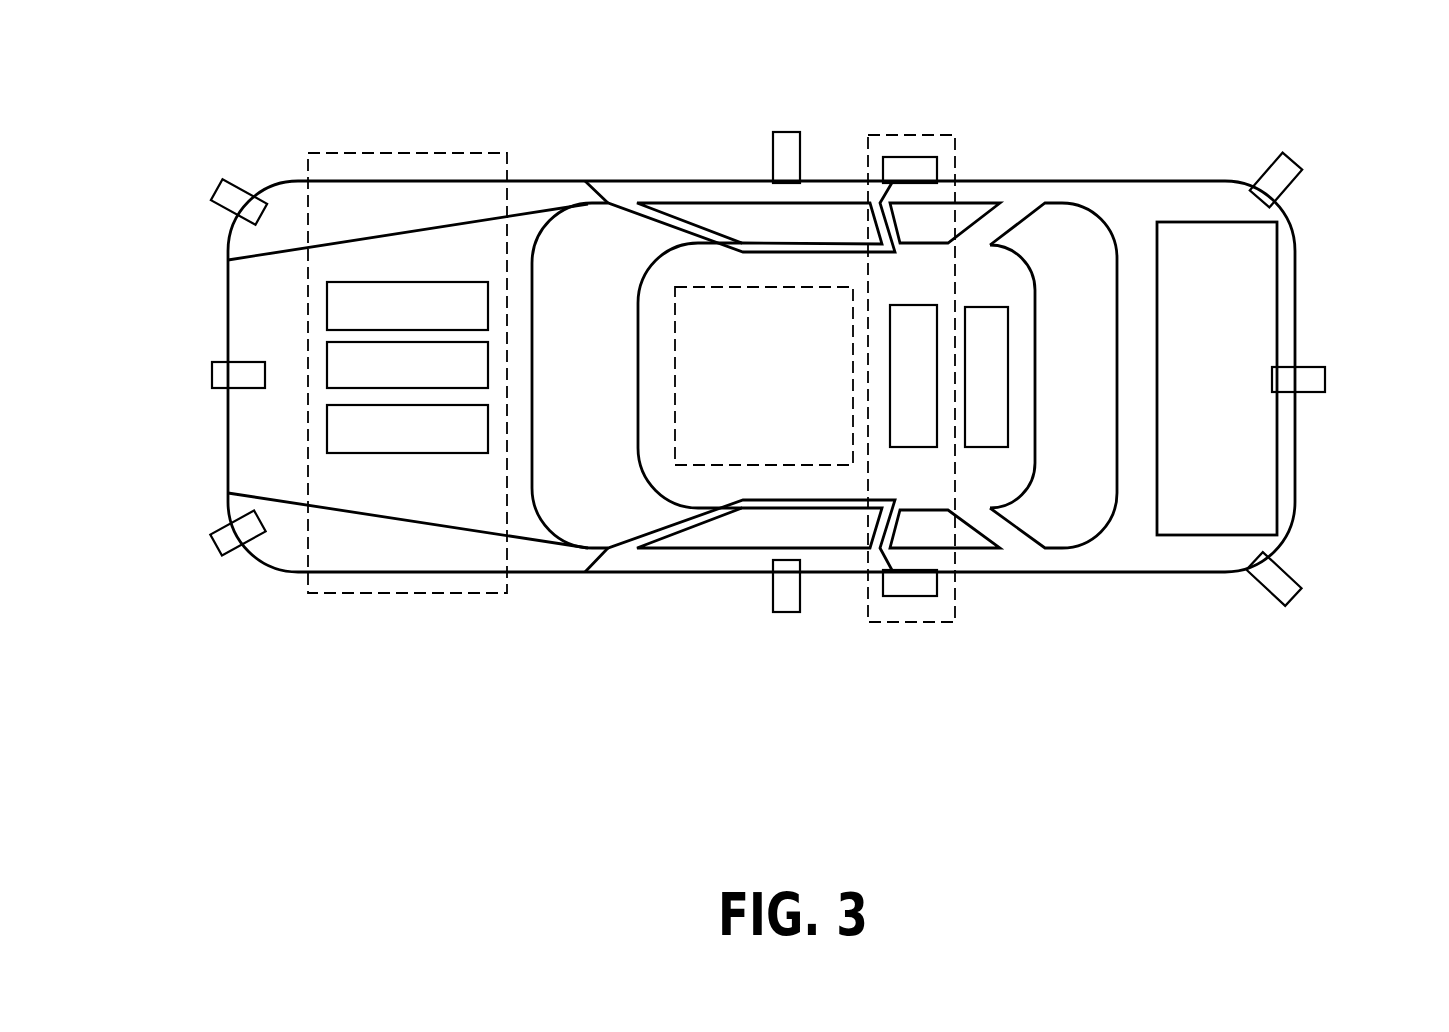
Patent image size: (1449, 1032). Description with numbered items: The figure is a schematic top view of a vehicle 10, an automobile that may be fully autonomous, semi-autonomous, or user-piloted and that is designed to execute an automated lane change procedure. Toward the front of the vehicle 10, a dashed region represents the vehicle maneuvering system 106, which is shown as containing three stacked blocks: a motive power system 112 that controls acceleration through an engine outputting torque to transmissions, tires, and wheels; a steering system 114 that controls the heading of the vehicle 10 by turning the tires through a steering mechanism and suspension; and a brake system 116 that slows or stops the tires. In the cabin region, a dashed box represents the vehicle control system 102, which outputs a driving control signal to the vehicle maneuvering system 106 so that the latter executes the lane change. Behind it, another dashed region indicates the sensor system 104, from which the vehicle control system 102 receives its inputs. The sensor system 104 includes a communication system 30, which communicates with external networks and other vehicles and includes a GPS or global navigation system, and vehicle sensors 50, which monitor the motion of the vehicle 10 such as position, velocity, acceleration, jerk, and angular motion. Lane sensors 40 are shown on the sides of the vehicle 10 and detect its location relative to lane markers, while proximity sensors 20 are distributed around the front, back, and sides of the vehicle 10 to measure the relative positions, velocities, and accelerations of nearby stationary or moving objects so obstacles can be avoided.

The vehicle 10 is at (1297, 262).
The proximity sensors 20 is at (215, 192).
The communication system 30 is at (987, 307).
The lane sensor 40 is at (937, 172).
The vehicle sensors 50 is at (913, 305).
The vehicle control system 102 is at (764, 288).
The sensor system 104 is at (912, 135).
The vehicle maneuvering system 106 is at (410, 152).
The motive power system 112 is at (407, 306).
The steering system 114 is at (407, 365).
The brake system 116 is at (407, 429).